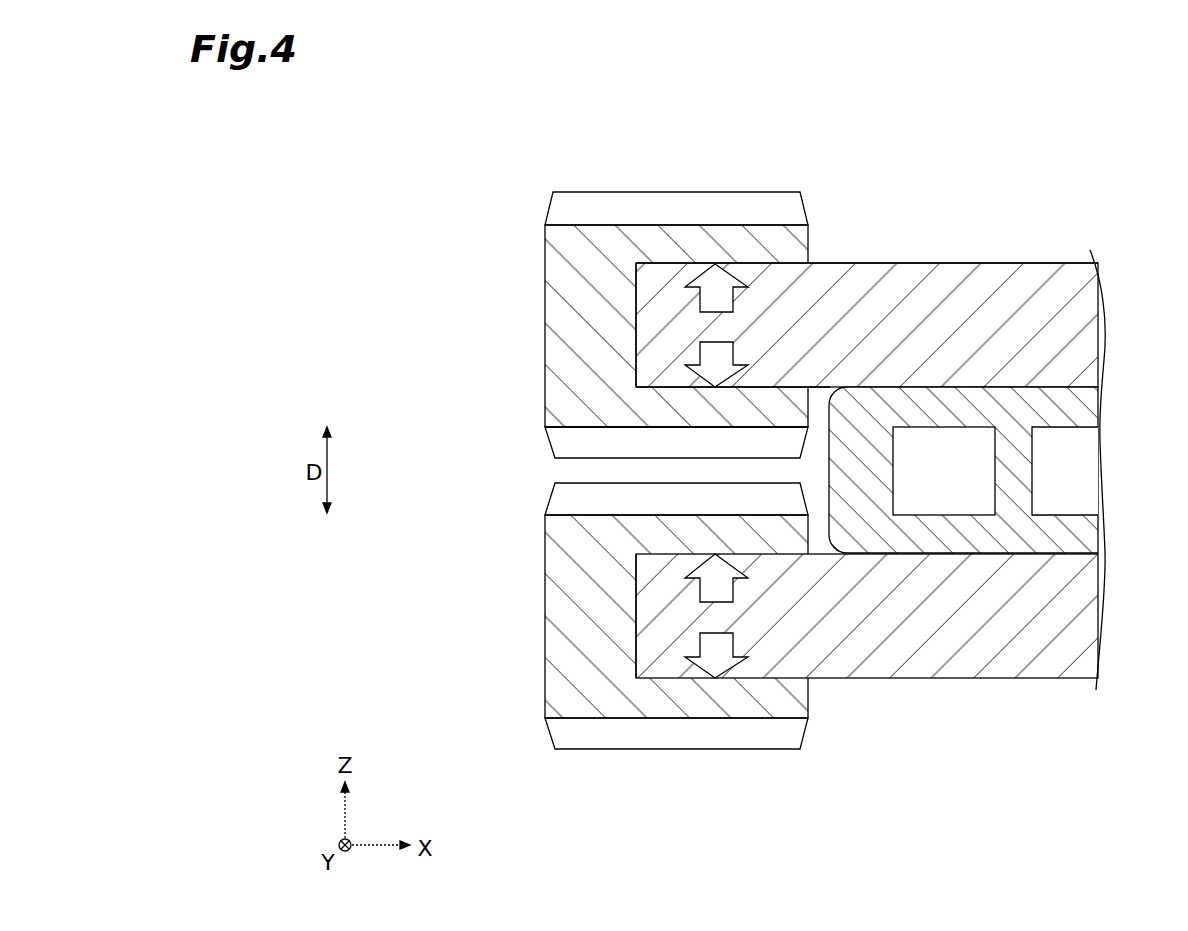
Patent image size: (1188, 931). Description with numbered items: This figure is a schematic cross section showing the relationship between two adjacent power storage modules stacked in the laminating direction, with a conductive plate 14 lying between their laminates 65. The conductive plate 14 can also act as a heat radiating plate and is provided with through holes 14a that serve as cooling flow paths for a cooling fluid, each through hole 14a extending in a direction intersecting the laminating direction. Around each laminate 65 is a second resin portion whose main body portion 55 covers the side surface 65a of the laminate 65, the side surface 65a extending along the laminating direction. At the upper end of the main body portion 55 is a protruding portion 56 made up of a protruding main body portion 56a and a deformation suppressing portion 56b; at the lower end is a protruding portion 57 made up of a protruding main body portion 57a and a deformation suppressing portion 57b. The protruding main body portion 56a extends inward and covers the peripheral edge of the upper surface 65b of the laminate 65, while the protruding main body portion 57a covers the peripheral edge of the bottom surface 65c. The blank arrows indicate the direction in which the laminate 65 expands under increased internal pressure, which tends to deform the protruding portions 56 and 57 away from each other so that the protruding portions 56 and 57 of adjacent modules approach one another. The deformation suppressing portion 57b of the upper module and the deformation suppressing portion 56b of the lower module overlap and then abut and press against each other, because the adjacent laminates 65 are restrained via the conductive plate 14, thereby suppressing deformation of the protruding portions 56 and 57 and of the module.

The conductive plate 14 is at (1005, 470).
The through hole 14a is at (920, 484).
The main body portion 55 is at (680, 477).
The protruding portion 56 is at (727, 281).
The protruding main body portion 56a is at (733, 240).
The deformation suppressing portion 56b is at (585, 197).
The protruding portion 57 is at (811, 456).
The protruding main body portion 57a is at (693, 413).
The deformation suppressing portion 57b is at (678, 448).
The laminate 65 is at (860, 406).
The side surface 65a is at (636, 297).
The upper surface 65b is at (757, 270).
The bottom surface 65c is at (758, 425).